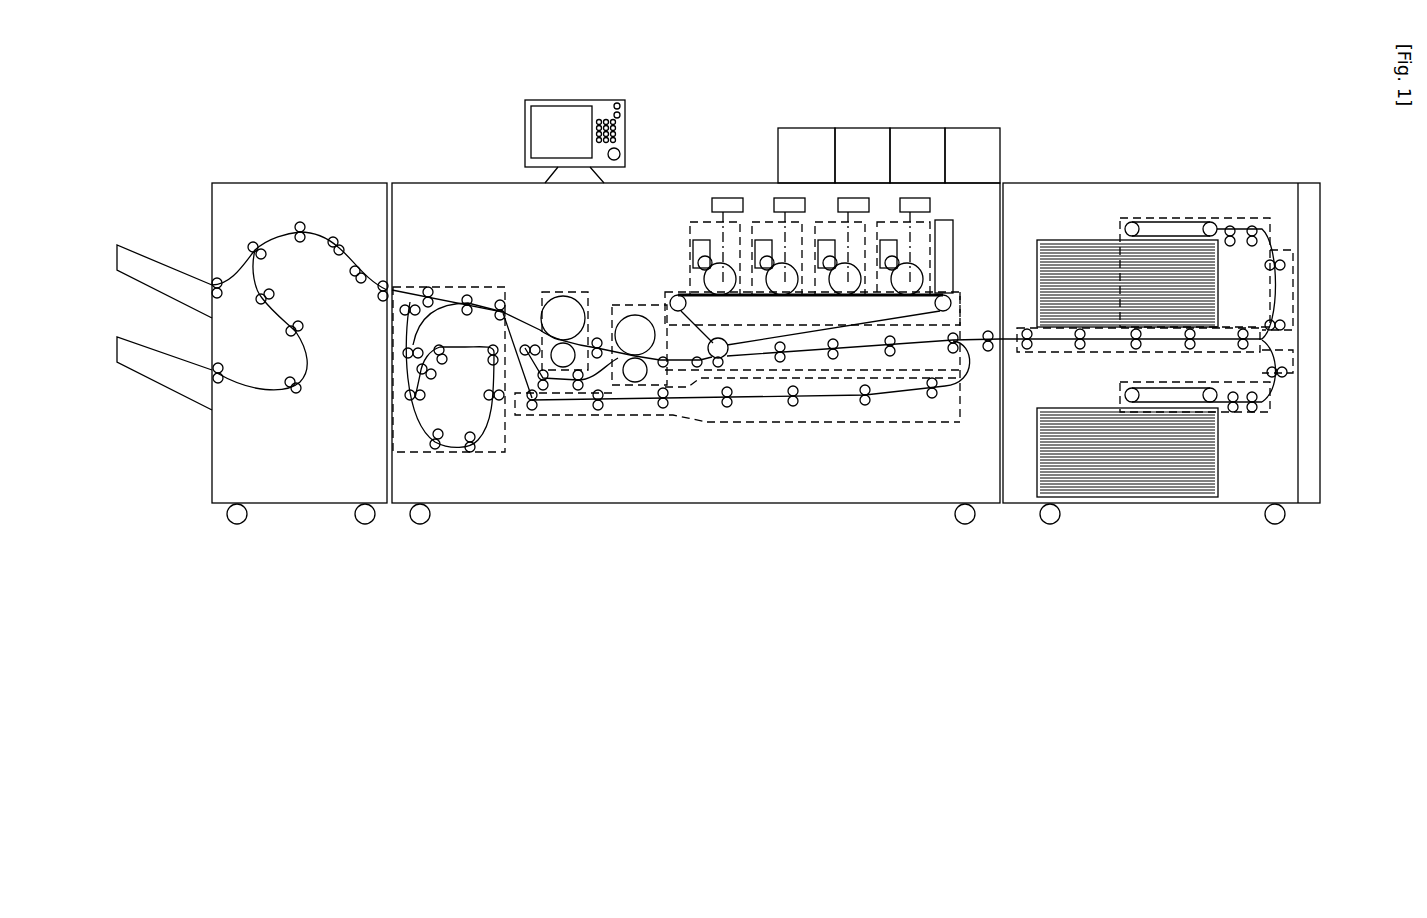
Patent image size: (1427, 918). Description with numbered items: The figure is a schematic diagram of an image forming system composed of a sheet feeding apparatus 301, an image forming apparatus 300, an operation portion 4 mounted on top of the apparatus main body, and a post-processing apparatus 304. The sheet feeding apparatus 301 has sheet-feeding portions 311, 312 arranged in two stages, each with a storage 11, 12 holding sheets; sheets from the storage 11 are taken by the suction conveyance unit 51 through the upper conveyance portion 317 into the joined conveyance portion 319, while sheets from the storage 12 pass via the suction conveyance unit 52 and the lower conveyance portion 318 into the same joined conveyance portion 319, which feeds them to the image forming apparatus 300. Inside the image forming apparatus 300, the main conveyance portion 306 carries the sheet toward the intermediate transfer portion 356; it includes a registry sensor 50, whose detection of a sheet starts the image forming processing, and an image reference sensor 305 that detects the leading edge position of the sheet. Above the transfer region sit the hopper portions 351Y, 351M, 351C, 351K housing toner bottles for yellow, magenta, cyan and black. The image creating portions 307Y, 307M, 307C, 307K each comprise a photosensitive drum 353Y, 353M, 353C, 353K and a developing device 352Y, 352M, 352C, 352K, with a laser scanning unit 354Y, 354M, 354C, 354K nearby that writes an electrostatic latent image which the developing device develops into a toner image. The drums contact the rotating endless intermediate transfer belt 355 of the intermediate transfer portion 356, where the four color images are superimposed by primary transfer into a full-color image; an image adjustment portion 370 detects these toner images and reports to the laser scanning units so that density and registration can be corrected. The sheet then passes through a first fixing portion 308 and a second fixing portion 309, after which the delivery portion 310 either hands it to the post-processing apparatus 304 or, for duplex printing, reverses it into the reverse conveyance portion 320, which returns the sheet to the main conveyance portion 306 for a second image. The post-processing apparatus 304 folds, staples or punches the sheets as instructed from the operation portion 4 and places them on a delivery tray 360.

The operation portion 4 is at (582, 100).
The storage 11 is at (1038, 242).
The storage 12 is at (1190, 497).
The registry sensor 50 is at (968, 330).
The suction conveyance unit 51 is at (1222, 218).
The suction conveyance unit 52 is at (1235, 412).
The image forming apparatus 300 is at (478, 184).
The sheet feeding apparatus 301 is at (1085, 184).
The post-processing apparatus 304 is at (294, 184).
The image reference sensor 305 is at (820, 352).
The main conveyance portion 306 is at (998, 345).
The image creating portion 307Y is at (718, 222).
The image creating portion 307M is at (780, 222).
The image creating portion 307C is at (846, 222).
The image creating portion 307K is at (925, 228).
The first fixing portion 308 is at (612, 306).
The second fixing portion 309 is at (548, 292).
The delivery portion 310 is at (445, 287).
The sheet-feeding portion 311 is at (1080, 247).
The sheet-feeding portion 312 is at (1132, 480).
The upper conveyance portion 317 is at (1290, 320).
The lower conveyance portion 318 is at (1290, 362).
The joined conveyance portion 319 is at (1100, 353).
The reverse conveyance portion 320 is at (680, 420).
The hopper portion 351Y is at (788, 128).
The hopper portion 351M is at (862, 128).
The hopper portion 351C is at (920, 128).
The hopper portion 351K is at (985, 128).
The developing device 352Y is at (693, 242).
The developing device 352M is at (762, 290).
The developing device 352C is at (830, 290).
The developing device 352K is at (897, 250).
The photosensitive drum 353Y is at (702, 270).
The photosensitive drum 353M is at (783, 298).
The photosensitive drum 353C is at (848, 298).
The photosensitive drum 353K is at (922, 286).
The laser scanning unit 354Y is at (720, 198).
The laser scanning unit 354M is at (790, 198).
The laser scanning unit 354C is at (869, 205).
The laser scanning unit 354K is at (930, 205).
The intermediate transfer belt 355 is at (742, 352).
The intermediate transfer portion 356 is at (683, 300).
The delivery tray 360 is at (138, 248).
The image adjustment portion 370 is at (953, 233).